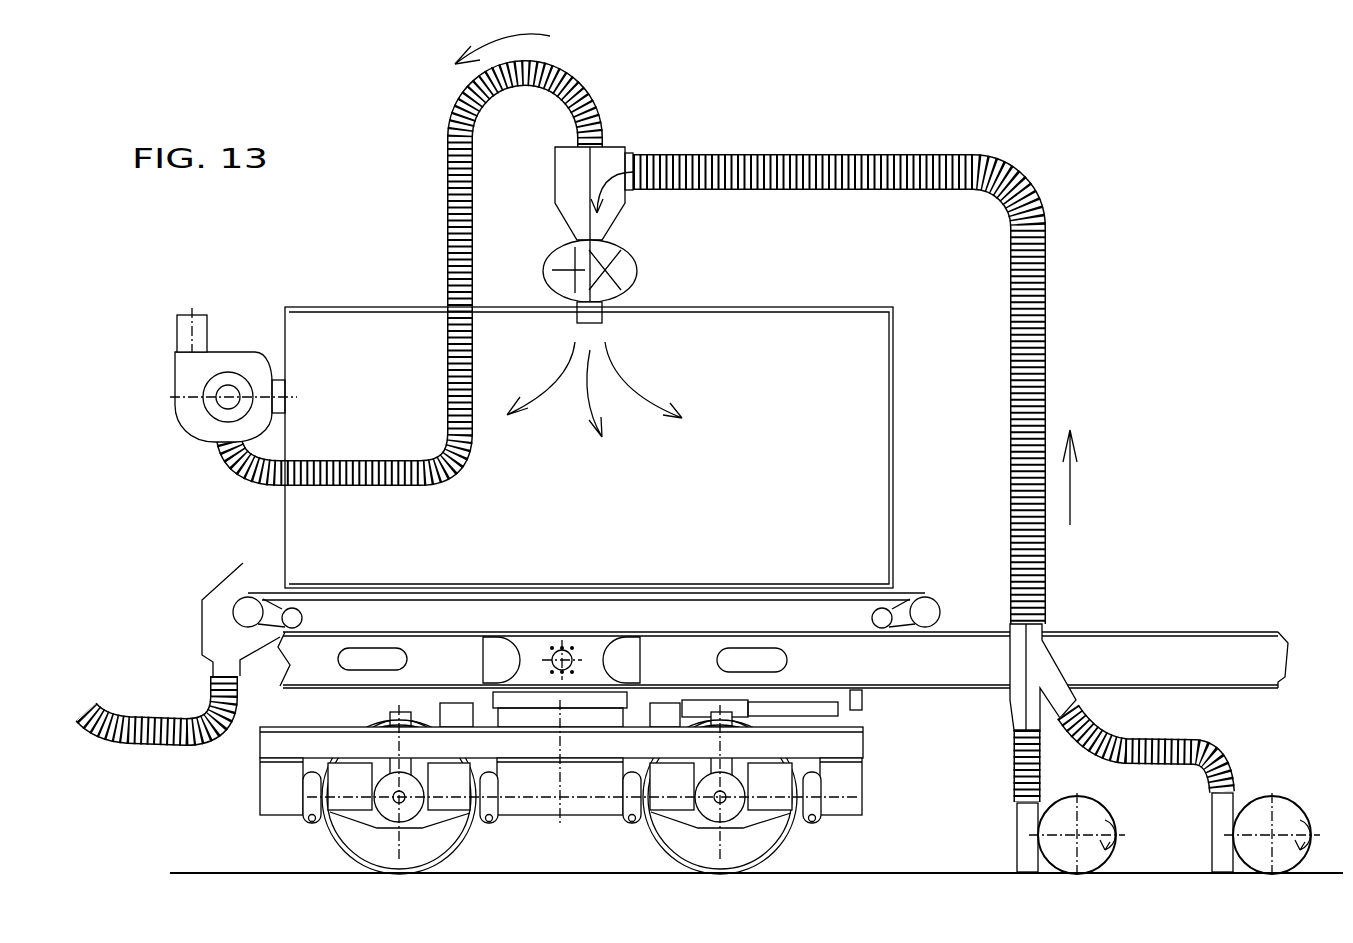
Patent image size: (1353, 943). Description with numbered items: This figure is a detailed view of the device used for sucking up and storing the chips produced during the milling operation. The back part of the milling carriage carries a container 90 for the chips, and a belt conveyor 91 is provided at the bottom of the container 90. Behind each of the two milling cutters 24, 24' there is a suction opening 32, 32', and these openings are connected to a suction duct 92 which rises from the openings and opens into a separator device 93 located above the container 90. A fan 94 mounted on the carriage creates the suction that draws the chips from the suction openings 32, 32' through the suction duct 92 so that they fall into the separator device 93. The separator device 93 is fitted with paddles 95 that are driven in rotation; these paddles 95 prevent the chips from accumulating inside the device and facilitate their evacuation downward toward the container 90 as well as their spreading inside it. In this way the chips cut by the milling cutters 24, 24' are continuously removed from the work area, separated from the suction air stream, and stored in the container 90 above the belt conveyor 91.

The milling cutter 24 is at (1288, 823).
The milling cutter 24' is at (1105, 835).
The suction opening 32 is at (1169, 814).
The suction opening 32' is at (1015, 748).
The container 90 is at (840, 410).
The belt conveyor 91 is at (897, 594).
The suction duct 92 is at (1030, 322).
The separator device 93 is at (610, 165).
The fan 94 is at (192, 373).
The paddles 95 is at (613, 268).